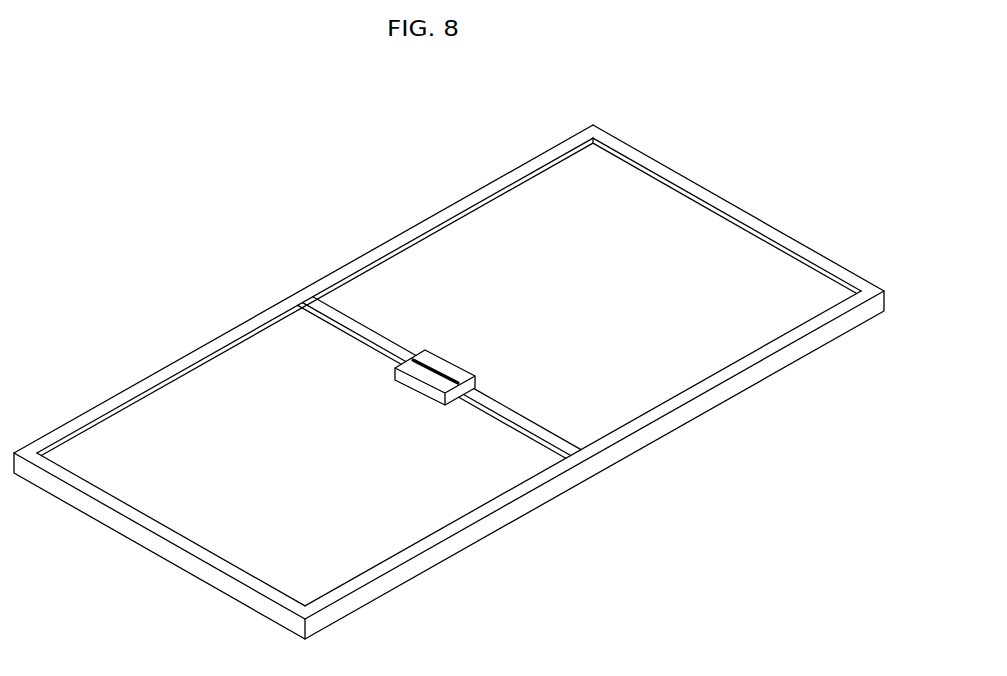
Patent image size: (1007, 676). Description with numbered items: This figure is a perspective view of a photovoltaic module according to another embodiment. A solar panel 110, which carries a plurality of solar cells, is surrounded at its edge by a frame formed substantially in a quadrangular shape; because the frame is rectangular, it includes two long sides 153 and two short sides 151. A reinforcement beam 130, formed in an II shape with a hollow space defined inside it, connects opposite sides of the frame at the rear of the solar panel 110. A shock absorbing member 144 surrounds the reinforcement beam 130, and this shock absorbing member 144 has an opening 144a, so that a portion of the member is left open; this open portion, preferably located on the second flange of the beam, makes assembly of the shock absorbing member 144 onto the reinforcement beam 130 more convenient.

The solar panel 110 is at (452, 247).
The reinforcement beam 130 is at (330, 312).
The shock absorbing member 144 is at (465, 368).
The opening 144a is at (432, 363).
The short sides 151 is at (672, 176).
The long sides 153 is at (186, 352).